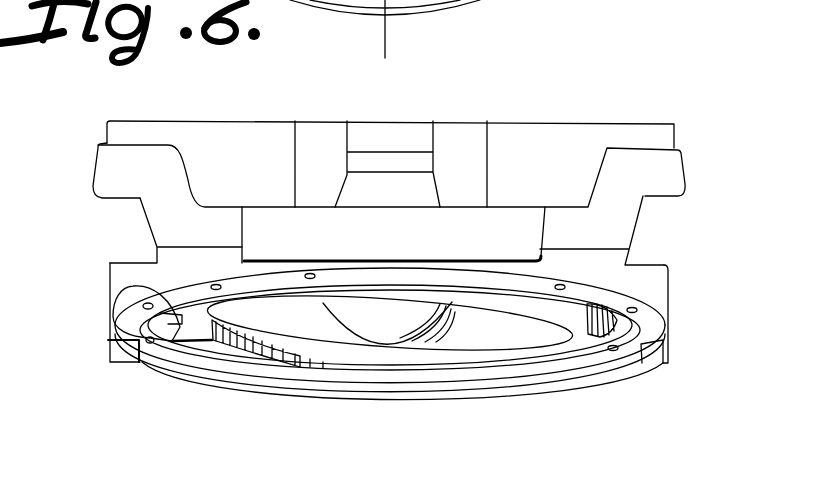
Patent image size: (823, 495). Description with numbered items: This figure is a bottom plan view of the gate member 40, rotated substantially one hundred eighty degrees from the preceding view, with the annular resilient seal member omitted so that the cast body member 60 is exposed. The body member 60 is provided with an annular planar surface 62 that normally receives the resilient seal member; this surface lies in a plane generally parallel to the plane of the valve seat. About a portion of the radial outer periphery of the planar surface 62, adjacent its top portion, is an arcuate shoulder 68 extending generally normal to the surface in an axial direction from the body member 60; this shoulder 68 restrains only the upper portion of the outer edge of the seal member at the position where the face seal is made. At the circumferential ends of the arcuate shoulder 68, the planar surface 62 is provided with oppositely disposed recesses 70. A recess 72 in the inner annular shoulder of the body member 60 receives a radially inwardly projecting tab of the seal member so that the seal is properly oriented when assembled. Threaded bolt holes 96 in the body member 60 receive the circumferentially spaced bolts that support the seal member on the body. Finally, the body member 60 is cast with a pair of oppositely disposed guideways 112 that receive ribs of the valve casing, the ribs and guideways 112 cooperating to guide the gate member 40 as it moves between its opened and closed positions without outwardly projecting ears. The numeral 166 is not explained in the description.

The gate member 40 is at (682, 138).
The cast body member 60 is at (690, 160).
The guideways 112 is at (120, 200).
The bolt holes 96 is at (562, 284).
The rotatable adjusting ring 166 is at (598, 302).
The annular planar surface 62 is at (647, 315).
The recesses 70 is at (108, 345).
The arcuate shoulder 68 is at (624, 361).
The recess 72 is at (133, 287).